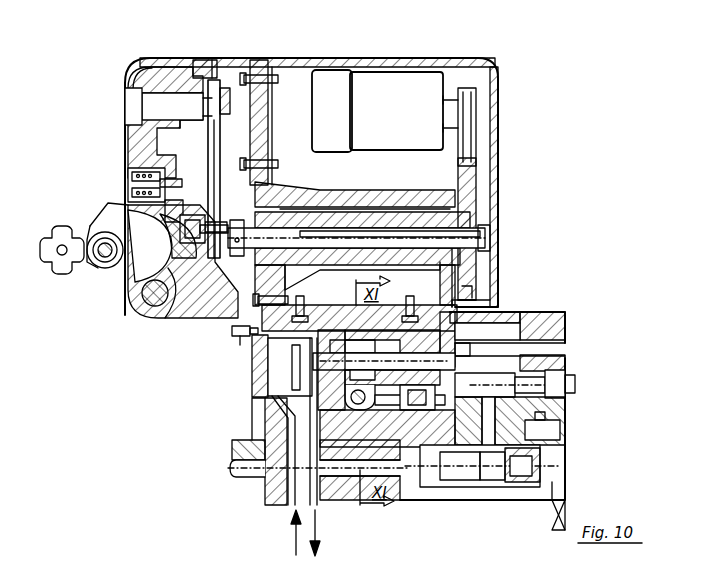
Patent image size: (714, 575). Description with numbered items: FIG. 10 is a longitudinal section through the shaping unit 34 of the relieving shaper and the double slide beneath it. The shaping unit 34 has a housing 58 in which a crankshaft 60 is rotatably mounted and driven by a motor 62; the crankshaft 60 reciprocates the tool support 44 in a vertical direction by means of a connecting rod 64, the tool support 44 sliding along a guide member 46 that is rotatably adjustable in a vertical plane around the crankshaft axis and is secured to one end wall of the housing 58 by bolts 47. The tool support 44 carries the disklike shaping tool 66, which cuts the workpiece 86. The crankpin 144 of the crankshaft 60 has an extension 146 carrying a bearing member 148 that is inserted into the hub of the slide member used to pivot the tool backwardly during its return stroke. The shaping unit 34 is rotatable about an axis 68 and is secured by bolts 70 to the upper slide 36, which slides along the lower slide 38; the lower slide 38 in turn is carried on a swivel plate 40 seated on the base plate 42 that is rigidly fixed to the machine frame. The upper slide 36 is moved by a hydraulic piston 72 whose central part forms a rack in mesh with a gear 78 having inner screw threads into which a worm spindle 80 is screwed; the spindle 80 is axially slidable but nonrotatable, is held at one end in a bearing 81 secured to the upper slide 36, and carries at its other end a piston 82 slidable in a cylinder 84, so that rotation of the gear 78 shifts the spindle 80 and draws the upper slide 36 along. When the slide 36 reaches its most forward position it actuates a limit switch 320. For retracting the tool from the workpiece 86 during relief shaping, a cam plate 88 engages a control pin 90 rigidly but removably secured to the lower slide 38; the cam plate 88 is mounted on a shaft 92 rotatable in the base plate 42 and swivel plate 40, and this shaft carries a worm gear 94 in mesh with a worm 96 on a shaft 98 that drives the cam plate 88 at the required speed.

The shaping unit 34 is at (468, 58).
The upper slide 36 is at (452, 328).
The lower slide 38 is at (560, 362).
The swivel plate 40 is at (548, 418).
The base plate 42 is at (268, 440).
The tool support 44 is at (138, 137).
The guide member 46 is at (206, 60).
The bolts 47 is at (278, 80).
The housing 58 is at (396, 60).
The crankshaft 60 is at (462, 222).
The motor 62 is at (330, 86).
The connecting rod 64 is at (220, 170).
The shaping tool 66 is at (100, 238).
The axis 68 is at (352, 318).
The bolts 70 is at (412, 310).
The hydraulic piston 72 is at (350, 402).
The gear 78 is at (318, 320).
The worm spindle 80 is at (394, 364).
The bearing 81 is at (458, 348).
The piston 82 is at (296, 366).
The cylinder 84 is at (290, 350).
The workpiece 86 is at (50, 242).
The cam plate 88 is at (492, 386).
The control pin 90 is at (552, 386).
The shaft 92 is at (488, 488).
The worm gear 94 is at (536, 474).
The worm 96 is at (500, 486).
The shaft 98 is at (256, 470).
The crankpin 144 is at (236, 222).
The extension 146 is at (200, 238).
The bearing member 148 is at (184, 208).
The limit switch 320 is at (232, 332).